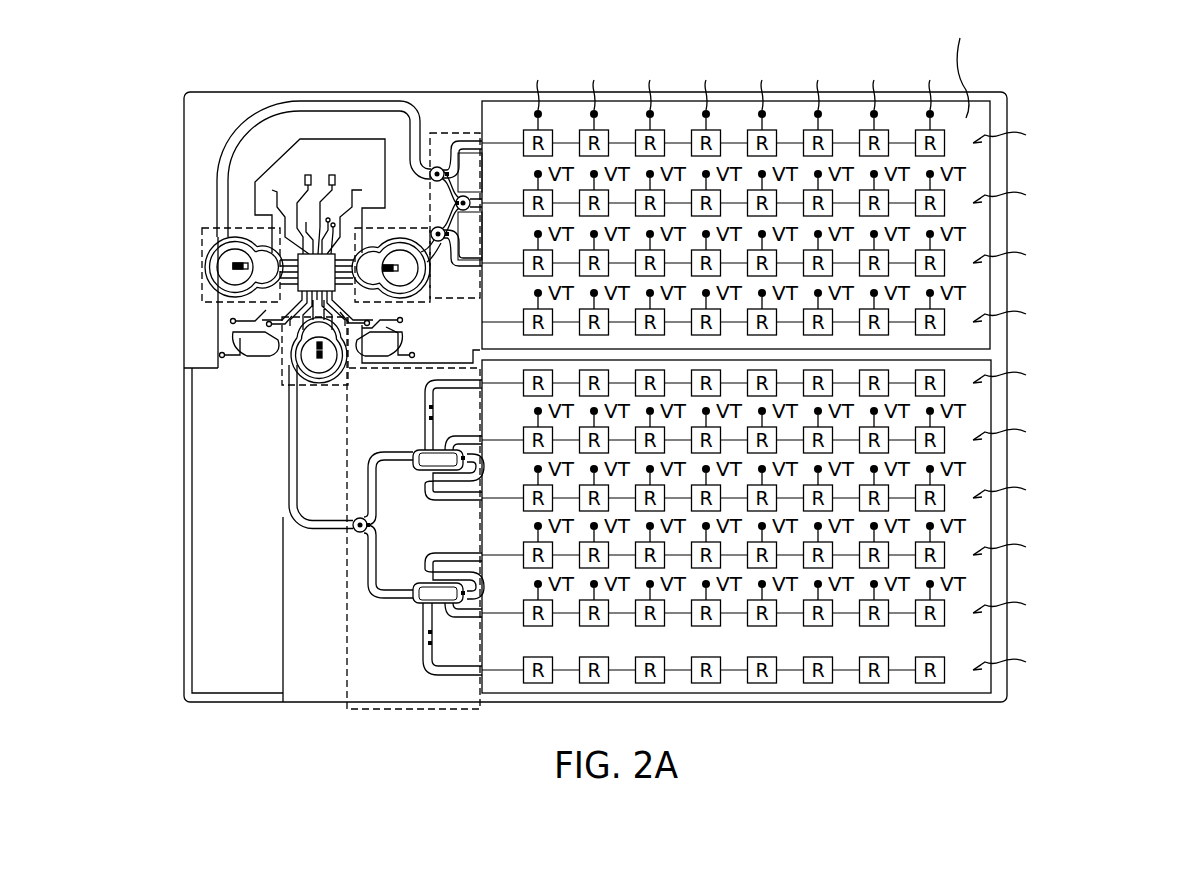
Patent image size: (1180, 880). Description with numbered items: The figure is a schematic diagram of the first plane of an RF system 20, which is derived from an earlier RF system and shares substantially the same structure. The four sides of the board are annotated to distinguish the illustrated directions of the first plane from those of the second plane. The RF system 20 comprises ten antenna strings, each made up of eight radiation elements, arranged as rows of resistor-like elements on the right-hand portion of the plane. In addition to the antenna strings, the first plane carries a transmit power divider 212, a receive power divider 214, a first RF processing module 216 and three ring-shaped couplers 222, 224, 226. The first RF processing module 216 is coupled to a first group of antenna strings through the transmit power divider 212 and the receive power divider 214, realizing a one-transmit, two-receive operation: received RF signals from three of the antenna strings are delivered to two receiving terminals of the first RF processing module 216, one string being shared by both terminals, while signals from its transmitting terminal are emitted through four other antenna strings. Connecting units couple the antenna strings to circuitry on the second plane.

The RF system 20 is at (1055, 68).
The transmit power divider 212 is at (362, 710).
The receive power divider 214 is at (460, 131).
The first RF processing module 216 is at (317, 252).
The ring-shaped coupler 222 is at (220, 354).
The ring-shaped coupler 224 is at (416, 300).
The ring-shaped coupler 226 is at (202, 258).